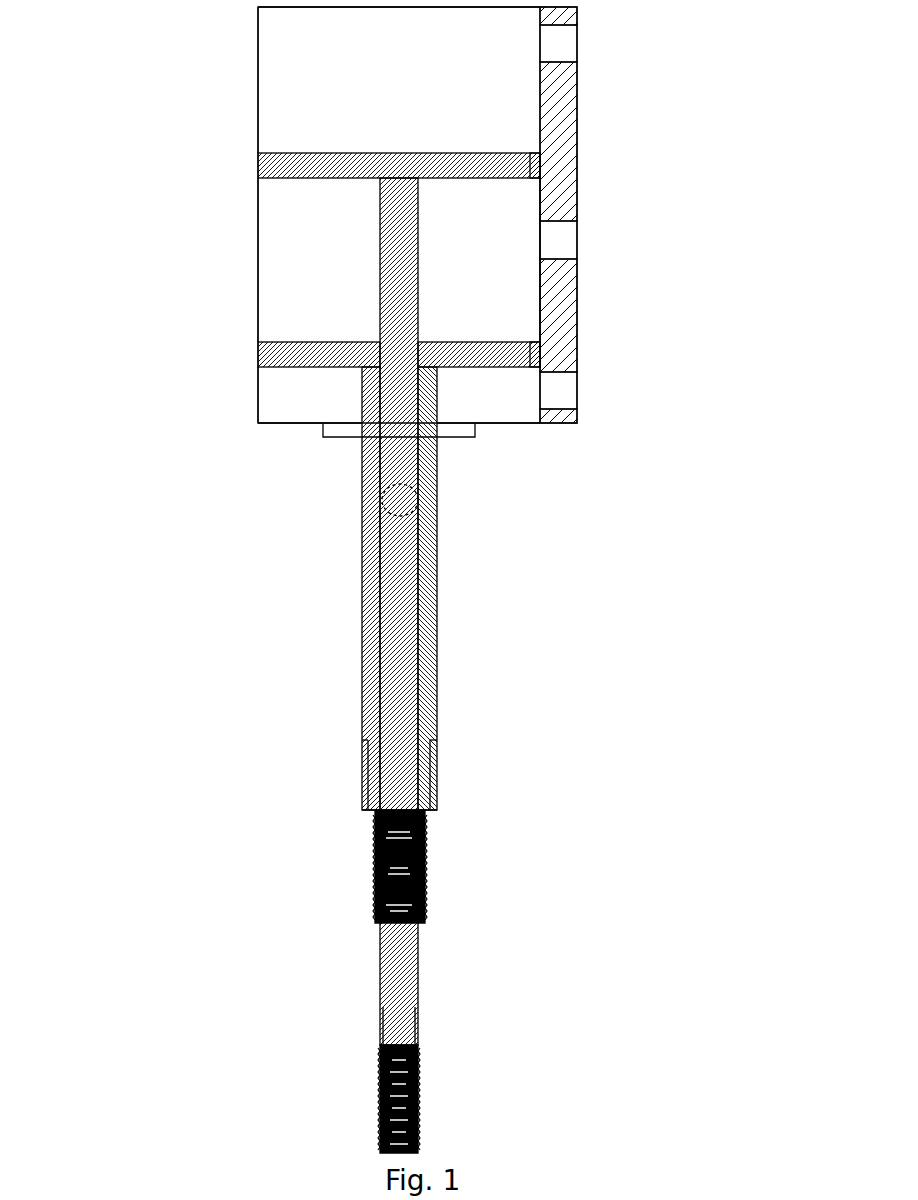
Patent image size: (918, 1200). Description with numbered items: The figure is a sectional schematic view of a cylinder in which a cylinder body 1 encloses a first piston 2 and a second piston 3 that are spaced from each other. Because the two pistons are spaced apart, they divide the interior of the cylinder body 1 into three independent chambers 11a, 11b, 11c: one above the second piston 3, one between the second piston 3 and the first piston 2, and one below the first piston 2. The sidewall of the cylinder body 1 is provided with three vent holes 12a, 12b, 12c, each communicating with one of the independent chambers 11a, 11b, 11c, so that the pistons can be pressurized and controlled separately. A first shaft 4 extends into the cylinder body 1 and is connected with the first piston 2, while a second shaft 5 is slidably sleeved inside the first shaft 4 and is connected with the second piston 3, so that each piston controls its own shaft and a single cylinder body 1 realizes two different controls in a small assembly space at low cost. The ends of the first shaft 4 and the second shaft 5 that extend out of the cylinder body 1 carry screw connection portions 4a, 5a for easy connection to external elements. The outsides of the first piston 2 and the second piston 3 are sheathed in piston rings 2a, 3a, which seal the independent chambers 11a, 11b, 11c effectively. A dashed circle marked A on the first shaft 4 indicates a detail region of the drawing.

The cylinder body 1 is at (257, 260).
The independent chamber 11a is at (293, 62).
The independent chamber 11b is at (285, 218).
The independent chamber 11c is at (278, 407).
The vent hole 12a is at (568, 38).
The vent hole 12b is at (566, 248).
The vent hole 12c is at (560, 398).
The first piston 2 is at (305, 350).
The piston ring 2a is at (542, 353).
The second piston 3 is at (300, 163).
The piston ring 3a is at (542, 163).
The first shaft 4 is at (363, 623).
The screw connection portion 4a is at (425, 875).
The second shaft 5 is at (383, 278).
The screw connection portion 5a is at (418, 1097).
The detail region A is at (412, 497).